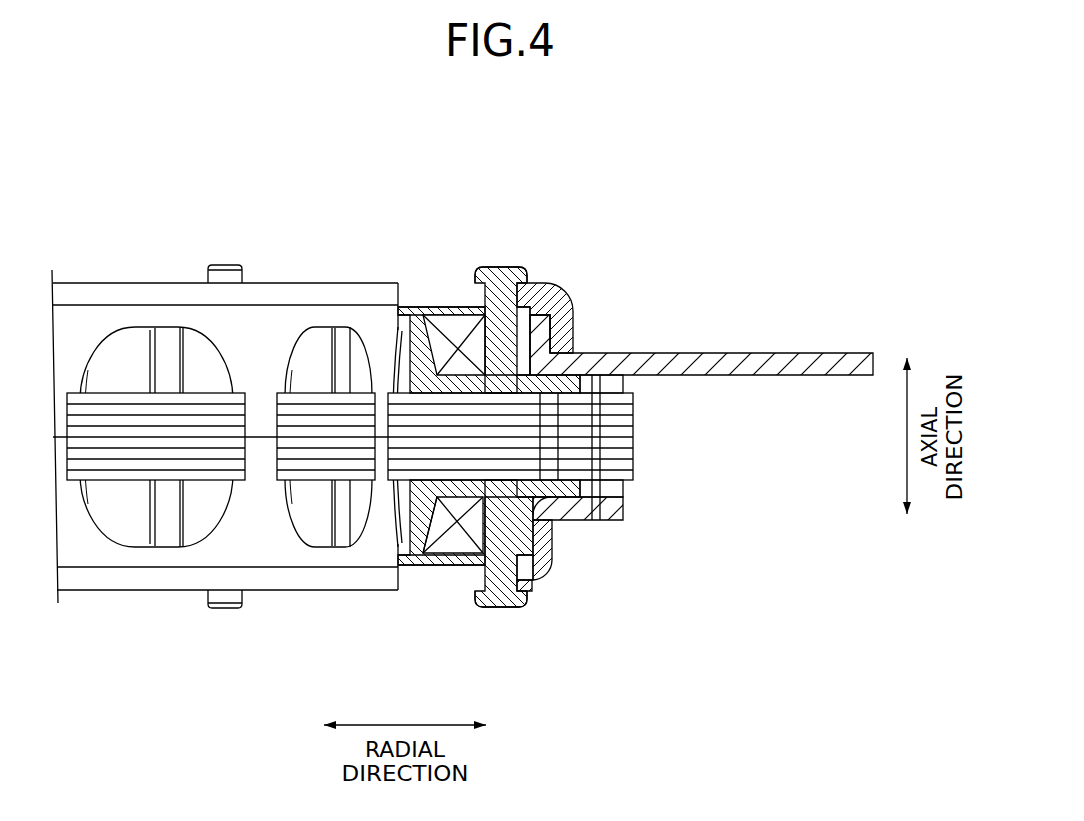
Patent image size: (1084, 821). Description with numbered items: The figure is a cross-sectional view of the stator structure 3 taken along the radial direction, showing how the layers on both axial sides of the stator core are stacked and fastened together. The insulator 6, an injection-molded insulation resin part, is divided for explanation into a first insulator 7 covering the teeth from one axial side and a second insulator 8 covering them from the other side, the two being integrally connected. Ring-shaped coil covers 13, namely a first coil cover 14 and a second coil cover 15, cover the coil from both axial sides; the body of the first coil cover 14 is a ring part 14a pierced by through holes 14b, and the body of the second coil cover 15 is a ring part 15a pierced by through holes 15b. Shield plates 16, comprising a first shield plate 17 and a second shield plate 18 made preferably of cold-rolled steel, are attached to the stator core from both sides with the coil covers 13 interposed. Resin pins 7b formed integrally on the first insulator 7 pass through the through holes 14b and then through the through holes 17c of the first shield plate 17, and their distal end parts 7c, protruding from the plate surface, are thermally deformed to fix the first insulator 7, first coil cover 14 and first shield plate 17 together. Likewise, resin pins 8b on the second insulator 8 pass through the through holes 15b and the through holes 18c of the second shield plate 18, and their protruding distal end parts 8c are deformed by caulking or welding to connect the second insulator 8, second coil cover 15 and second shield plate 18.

The stator structure 3 is at (755, 180).
The insulator 6 is at (674, 441).
The first insulator 7 is at (674, 290).
The resin pins 7b is at (540, 326).
The distal end parts 7c is at (498, 266).
The second insulator 8 is at (567, 587).
The resin pins 8b is at (555, 576).
The distal end parts 8c is at (498, 609).
The coil covers 13 is at (482, 447).
The first coil cover 14 is at (482, 309).
The ring part 14a is at (420, 308).
The through holes 14b is at (462, 312).
The second coil cover 15 is at (482, 574).
The ring part 15a is at (423, 568).
The through holes 15b is at (462, 568).
The shield plates 16 is at (582, 437).
The first shield plate 17 is at (582, 289).
The through holes 17c is at (523, 320).
The second shield plate 18 is at (581, 595).
The through holes 18c is at (525, 582).